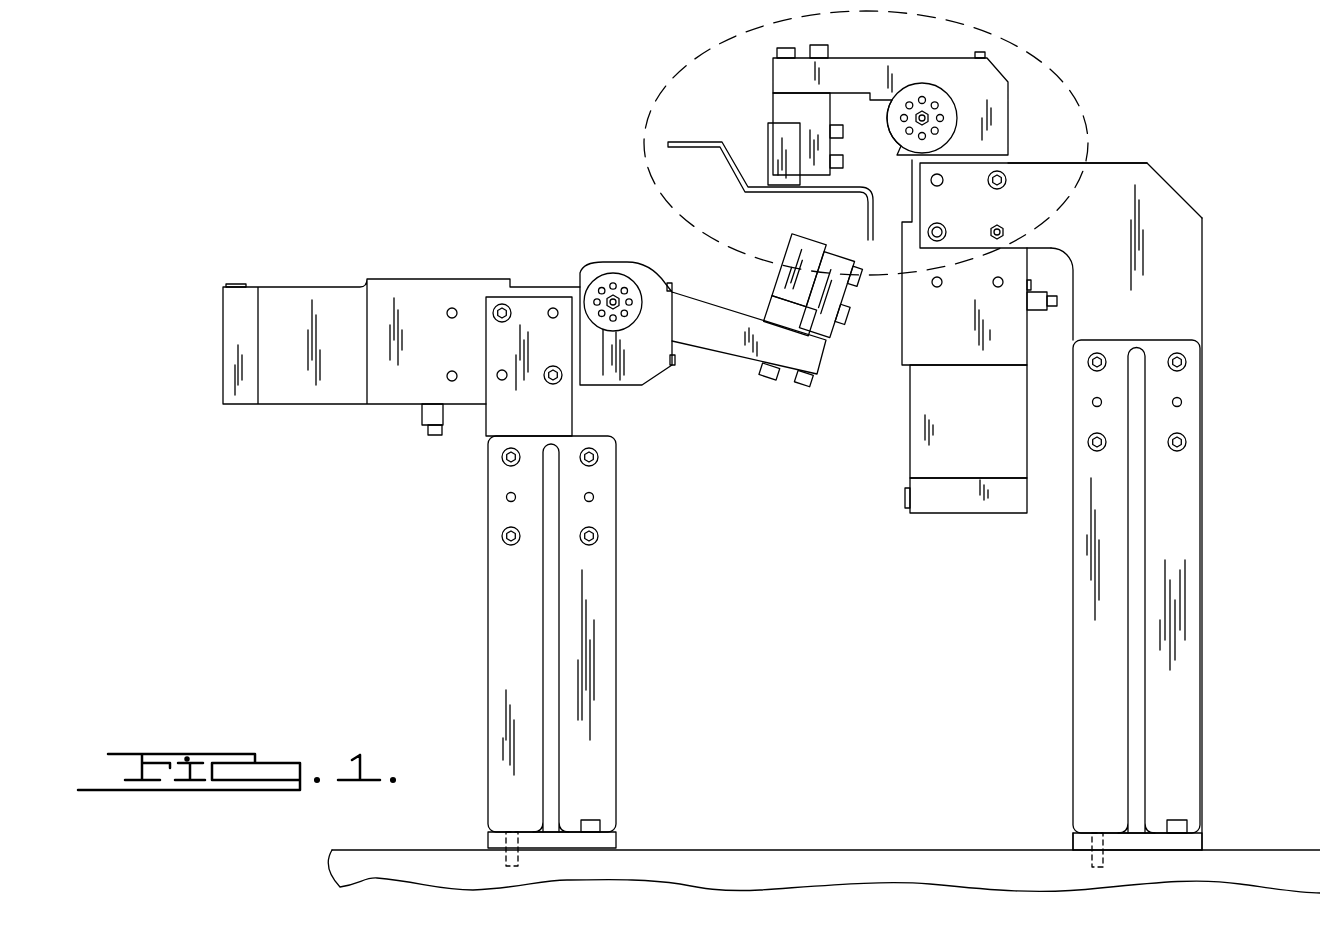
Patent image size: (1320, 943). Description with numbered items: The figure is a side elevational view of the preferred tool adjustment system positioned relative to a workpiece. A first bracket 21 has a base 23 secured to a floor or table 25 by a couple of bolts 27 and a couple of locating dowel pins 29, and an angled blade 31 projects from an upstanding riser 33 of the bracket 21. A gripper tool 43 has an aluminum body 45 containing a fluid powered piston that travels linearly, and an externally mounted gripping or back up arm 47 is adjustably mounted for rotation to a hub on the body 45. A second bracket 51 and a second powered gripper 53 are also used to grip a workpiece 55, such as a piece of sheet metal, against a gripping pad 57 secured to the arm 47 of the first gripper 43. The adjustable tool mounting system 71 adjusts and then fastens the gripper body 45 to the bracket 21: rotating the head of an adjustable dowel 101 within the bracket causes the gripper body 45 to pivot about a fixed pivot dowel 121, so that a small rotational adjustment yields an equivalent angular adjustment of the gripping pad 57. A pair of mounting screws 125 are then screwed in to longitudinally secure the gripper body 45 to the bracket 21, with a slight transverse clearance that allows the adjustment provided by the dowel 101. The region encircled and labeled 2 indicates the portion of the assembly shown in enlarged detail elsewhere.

The detail region of FIG. 2 is at (1102, 124).
The bracket 21 is at (1183, 583).
The base 23 is at (1193, 841).
The floor or table 25 is at (338, 878).
The bolts 27 is at (1180, 821).
The locating dowel pins 29 is at (1090, 840).
The angled blade 31 is at (1065, 190).
The upstanding riser 33 is at (1090, 663).
The gripper tool 43 is at (945, 498).
The body 45 is at (920, 350).
The gripping or back up arm 47 is at (878, 78).
The second bracket 51 is at (496, 645).
The second powered gripper 53 is at (292, 298).
The workpiece 55 is at (666, 146).
The gripping pad 57 is at (776, 152).
The adjustable tool mounting system 71 is at (1024, 76).
The adjustable dowel 101 is at (1006, 232).
The fixed pivot dowel 121 is at (938, 178).
The mounting screws or bolts 125 is at (999, 188).